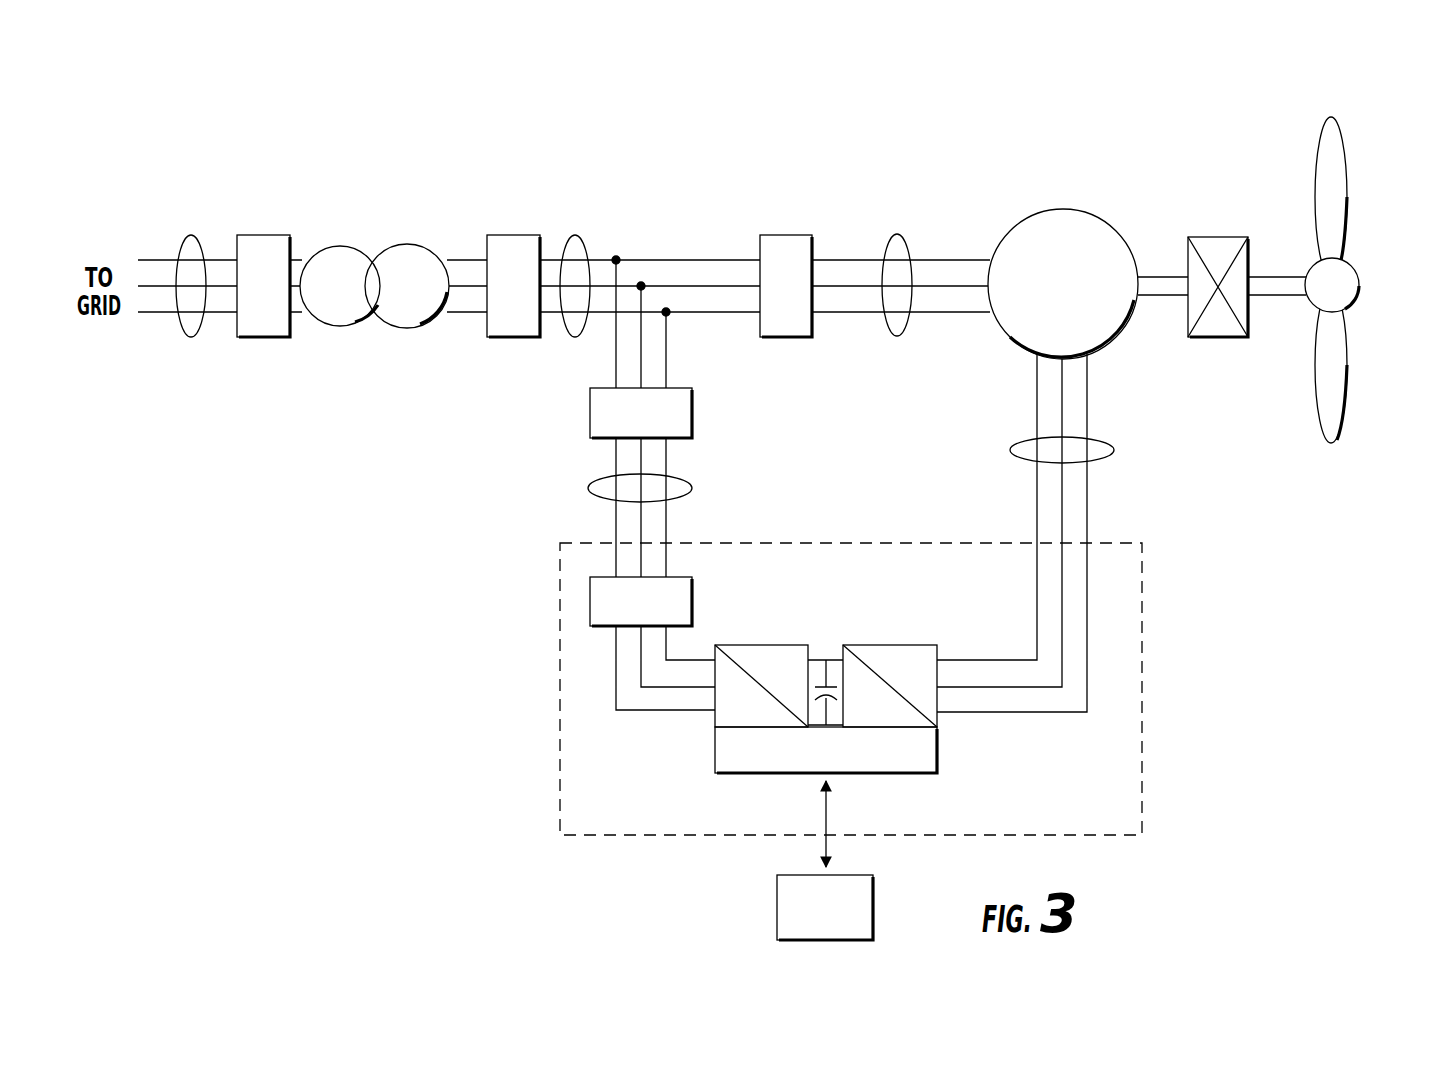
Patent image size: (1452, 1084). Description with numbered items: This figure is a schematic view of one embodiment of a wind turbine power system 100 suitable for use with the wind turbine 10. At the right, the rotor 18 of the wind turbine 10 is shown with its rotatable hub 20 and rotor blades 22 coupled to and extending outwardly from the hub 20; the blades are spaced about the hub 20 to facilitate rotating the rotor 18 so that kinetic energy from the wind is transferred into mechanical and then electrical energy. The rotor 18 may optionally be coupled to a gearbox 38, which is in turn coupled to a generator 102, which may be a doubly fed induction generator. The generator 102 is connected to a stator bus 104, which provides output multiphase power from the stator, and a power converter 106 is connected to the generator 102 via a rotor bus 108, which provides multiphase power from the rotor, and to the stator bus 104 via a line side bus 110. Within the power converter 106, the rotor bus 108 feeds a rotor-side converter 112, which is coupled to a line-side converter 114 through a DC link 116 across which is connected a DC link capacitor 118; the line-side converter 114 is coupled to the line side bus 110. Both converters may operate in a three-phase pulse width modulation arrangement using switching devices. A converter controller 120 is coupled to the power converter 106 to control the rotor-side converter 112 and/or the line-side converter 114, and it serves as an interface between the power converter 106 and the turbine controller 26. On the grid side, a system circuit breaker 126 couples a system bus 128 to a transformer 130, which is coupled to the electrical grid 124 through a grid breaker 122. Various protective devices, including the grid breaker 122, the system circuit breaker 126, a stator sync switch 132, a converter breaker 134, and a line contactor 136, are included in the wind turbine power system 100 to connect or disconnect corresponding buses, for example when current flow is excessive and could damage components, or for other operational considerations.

The wind turbine 10 is at (1349, 98).
The rotor 18 is at (1364, 238).
The rotatable hub 20 is at (1357, 280).
The rotor blade 22 is at (1346, 168).
The turbine controller 26 is at (825, 907).
The gearbox 38 is at (1204, 236).
The wind turbine power system 100 is at (400, 116).
The generator 102 is at (1063, 208).
The stator bus 104 is at (898, 234).
The power converter 106 is at (1142, 633).
The rotor bus 108 is at (1115, 450).
The line side bus 110 is at (693, 488).
The rotor-side converter 112 is at (940, 718).
The line-side converter 114 is at (715, 720).
The DC link 116 is at (838, 660).
The DC link capacitor 118 is at (820, 682).
The converter controller 120 is at (750, 775).
The grid breaker 122 is at (273, 236).
The electrical grid 124 is at (190, 235).
The system circuit breaker 126 is at (509, 236).
The system bus 128 is at (574, 236).
The transformer 130 is at (405, 243).
The stator sync switch 132 is at (781, 236).
The converter breaker 134 is at (693, 420).
The line contactor 136 is at (693, 608).